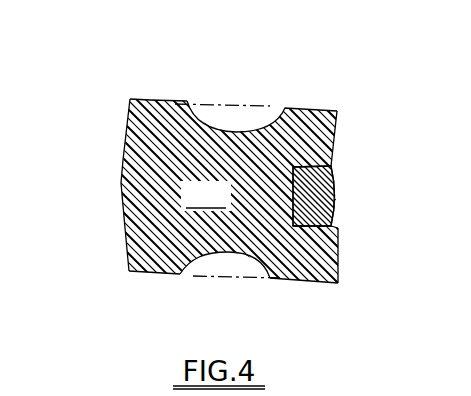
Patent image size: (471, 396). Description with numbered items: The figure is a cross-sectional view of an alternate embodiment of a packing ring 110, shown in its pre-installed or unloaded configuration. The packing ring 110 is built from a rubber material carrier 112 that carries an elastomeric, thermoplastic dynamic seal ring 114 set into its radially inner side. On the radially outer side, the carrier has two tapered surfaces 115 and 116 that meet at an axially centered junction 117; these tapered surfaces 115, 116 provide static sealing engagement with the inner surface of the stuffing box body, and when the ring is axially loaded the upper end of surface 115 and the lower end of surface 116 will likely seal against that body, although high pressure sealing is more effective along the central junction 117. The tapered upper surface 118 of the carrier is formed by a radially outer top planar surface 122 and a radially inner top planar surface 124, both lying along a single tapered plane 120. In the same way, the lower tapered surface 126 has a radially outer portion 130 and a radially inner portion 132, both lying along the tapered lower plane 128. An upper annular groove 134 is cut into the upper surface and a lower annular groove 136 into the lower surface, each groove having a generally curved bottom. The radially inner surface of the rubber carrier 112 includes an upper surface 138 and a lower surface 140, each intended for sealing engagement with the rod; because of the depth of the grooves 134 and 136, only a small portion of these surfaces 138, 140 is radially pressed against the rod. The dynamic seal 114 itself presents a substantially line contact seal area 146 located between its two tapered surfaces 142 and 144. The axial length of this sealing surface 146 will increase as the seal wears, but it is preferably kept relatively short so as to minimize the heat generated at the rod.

The packing ring 110 is at (343, 100).
The rubber material carrier 112 is at (186, 208).
The elastomeric dynamic seal ring 114 is at (334, 212).
The radially outer tapered surface 115 is at (127, 133).
The radially outer tapered surface 116 is at (125, 228).
The axially centered junction 117 is at (118, 185).
The tapered upper surface 118 is at (185, 98).
The tapered plane 120 is at (247, 107).
The radially outer top planar surface 122 is at (137, 98).
The radially inner top planar surface 124 is at (308, 108).
The lower tapered surface 126 is at (178, 277).
The tapered lower plane 128 is at (212, 277).
The radially outer portion 130 is at (147, 277).
The radially inner portion 132 is at (312, 287).
The upper annular groove 134 is at (220, 126).
The lower annular groove 136 is at (250, 257).
The upper surface 138 is at (337, 127).
The lower surface 140 is at (338, 263).
The tapered surface 142 is at (333, 167).
The tapered surface 144 is at (336, 227).
The line contact seal area 146 is at (336, 200).